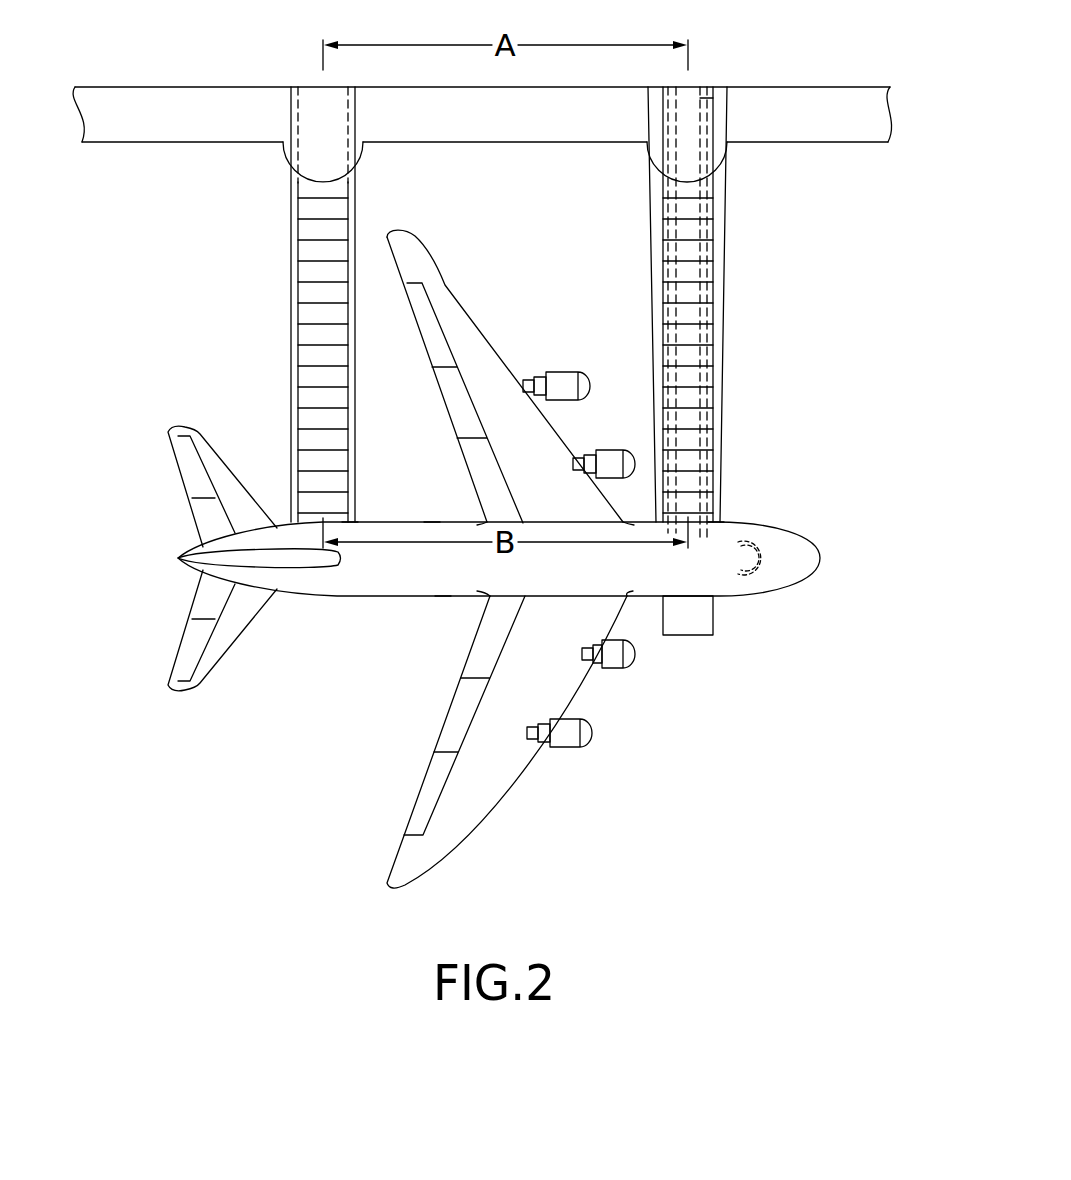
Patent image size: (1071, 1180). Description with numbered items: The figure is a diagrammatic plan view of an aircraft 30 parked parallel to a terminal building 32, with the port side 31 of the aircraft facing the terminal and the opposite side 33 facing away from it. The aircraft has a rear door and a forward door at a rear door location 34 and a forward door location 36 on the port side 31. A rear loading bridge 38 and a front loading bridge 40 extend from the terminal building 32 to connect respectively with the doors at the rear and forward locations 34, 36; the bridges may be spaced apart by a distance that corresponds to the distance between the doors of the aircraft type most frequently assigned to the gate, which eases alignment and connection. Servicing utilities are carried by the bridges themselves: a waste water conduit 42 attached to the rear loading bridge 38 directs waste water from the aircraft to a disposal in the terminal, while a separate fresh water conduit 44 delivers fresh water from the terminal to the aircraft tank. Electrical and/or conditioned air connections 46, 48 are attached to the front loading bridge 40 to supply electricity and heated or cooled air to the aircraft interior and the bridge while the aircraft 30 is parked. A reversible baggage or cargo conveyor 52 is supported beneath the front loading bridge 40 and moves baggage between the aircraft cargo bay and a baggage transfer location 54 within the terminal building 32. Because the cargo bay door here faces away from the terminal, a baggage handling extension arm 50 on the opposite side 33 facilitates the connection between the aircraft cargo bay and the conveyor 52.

The aircraft 30 is at (403, 617).
The port side 31 is at (432, 520).
The terminal building 32 is at (107, 150).
The opposite side 33 is at (443, 598).
The rear door location 34 is at (352, 520).
The forward door location 36 is at (716, 521).
The rear loading bridge 38 is at (308, 304).
The front loading bridge 40 is at (714, 312).
The waste water conduit 42 is at (290, 100).
The fresh water conduit 44 is at (358, 100).
The electrical or conditioned air connection 46 is at (651, 158).
The electrical or conditioned air connection 48 is at (726, 160).
The baggage handling extension arm 50 is at (728, 633).
The baggage or cargo conveyor 52 is at (726, 282).
The baggage transfer location 54 is at (713, 98).